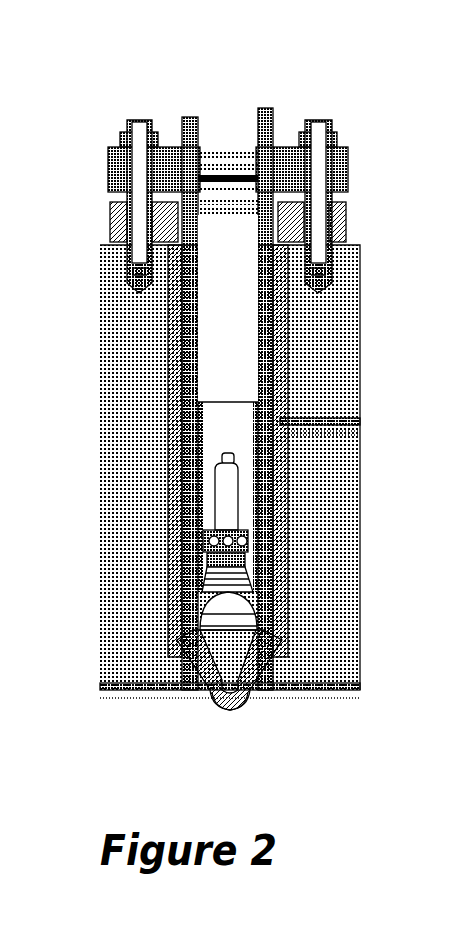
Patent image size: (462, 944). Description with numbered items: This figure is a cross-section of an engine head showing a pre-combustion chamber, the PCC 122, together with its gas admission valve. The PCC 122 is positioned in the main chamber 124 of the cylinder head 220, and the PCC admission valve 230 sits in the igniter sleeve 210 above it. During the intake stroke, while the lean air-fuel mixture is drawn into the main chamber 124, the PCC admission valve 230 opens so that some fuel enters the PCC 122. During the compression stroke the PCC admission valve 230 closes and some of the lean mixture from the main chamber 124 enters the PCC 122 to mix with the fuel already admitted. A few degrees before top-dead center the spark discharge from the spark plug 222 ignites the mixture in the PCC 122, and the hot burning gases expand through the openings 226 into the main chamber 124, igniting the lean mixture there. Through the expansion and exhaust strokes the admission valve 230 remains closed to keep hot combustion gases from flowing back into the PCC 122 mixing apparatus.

The igniter sleeve 210 is at (345, 223).
The cylinder head 220 is at (337, 548).
The PCC admission valve 230 is at (360, 422).
The spark plug 222 is at (207, 530).
The PCC 122 is at (203, 633).
The openings 226 is at (210, 693).
The main chamber 124 is at (248, 766).